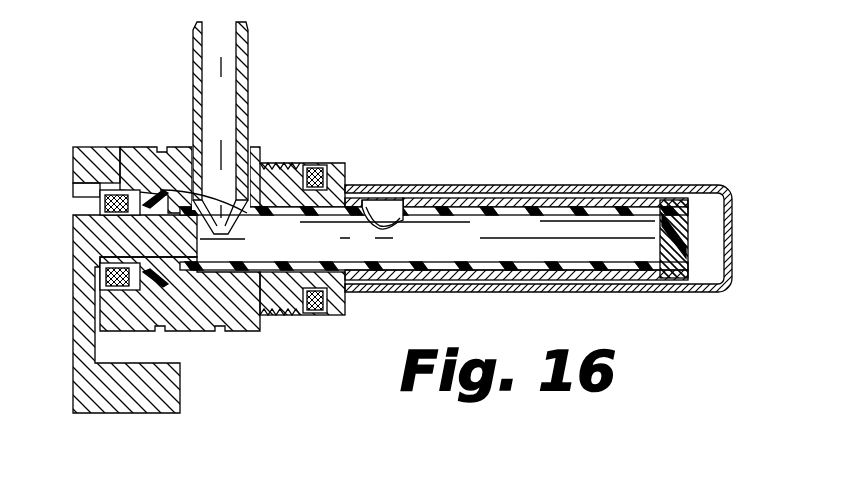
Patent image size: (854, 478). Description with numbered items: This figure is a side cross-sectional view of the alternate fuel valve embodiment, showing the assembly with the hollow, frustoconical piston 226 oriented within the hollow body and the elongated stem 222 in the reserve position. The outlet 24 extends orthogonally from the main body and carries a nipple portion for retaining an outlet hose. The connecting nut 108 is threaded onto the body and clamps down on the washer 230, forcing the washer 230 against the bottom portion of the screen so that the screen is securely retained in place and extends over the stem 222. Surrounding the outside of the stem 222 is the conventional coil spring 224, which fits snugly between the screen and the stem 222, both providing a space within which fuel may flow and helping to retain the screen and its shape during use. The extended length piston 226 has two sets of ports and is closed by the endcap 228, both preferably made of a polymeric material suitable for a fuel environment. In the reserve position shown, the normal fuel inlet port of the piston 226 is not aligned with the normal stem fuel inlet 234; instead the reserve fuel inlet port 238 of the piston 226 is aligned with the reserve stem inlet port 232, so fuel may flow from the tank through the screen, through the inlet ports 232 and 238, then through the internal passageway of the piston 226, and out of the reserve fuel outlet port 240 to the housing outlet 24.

The outlet 24 is at (250, 92).
The connecting nut 108 is at (300, 314).
The stem 222 is at (583, 198).
The coil spring 224 is at (510, 193).
The piston 226 is at (642, 262).
The endcap 228 is at (688, 232).
The washer 230 is at (328, 163).
The reserve stem inlet port 232 is at (390, 200).
The normal stem fuel inlet 234 is at (624, 200).
The reserve fuel inlet port 238 is at (385, 232).
The reserve fuel outlet port 240 is at (216, 220).